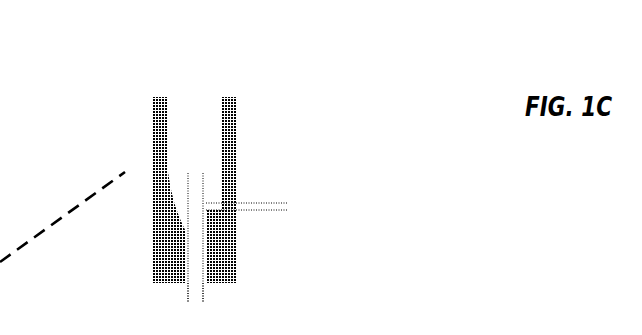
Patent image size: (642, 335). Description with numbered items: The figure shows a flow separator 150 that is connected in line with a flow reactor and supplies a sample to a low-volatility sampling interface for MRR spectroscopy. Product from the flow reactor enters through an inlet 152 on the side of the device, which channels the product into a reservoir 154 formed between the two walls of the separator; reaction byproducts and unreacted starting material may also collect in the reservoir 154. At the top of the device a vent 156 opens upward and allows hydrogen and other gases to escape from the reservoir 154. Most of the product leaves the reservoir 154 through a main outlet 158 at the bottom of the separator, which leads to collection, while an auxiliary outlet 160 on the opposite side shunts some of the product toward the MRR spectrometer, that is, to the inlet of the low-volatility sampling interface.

The flow separator 150 is at (223, 152).
The inlet 152 is at (165, 148).
The reservoir 154 is at (208, 192).
The vent 156 is at (197, 94).
The main outlet 158 is at (214, 309).
The auxiliary outlet 160 is at (355, 234).